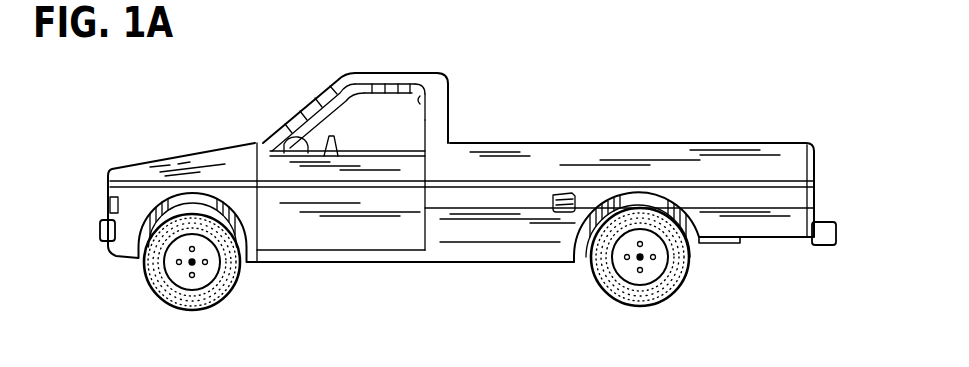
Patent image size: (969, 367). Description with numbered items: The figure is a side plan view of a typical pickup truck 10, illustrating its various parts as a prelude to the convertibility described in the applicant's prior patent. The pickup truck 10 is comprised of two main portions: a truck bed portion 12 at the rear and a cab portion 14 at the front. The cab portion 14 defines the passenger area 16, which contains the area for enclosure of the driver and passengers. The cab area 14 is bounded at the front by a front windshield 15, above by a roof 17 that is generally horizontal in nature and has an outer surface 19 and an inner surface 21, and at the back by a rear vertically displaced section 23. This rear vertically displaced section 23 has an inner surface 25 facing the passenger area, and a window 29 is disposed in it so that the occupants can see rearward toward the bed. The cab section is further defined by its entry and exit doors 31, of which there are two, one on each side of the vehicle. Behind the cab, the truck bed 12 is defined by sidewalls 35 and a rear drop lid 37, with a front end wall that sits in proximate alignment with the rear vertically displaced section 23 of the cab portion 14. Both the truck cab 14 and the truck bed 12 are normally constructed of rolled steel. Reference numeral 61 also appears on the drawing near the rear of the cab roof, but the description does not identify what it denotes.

The pickup truck 10 is at (225, 108).
The truck bed portion 12 is at (667, 143).
The cab portion 14 is at (338, 73).
The front windshield 15 is at (287, 114).
The passenger area 16 is at (383, 130).
The roof 17 is at (357, 73).
The outer surface 19 is at (370, 73).
The inner surface 21 is at (421, 100).
The rear vertically displaced section 23 is at (452, 94).
The inner surface 25 is at (426, 97).
The window 29 is at (450, 120).
The entry and exit doors 31 is at (288, 236).
The sidewalls 35 is at (719, 205).
The rear drop lid 37 is at (816, 188).
The cab rear wall 61 is at (452, 87).